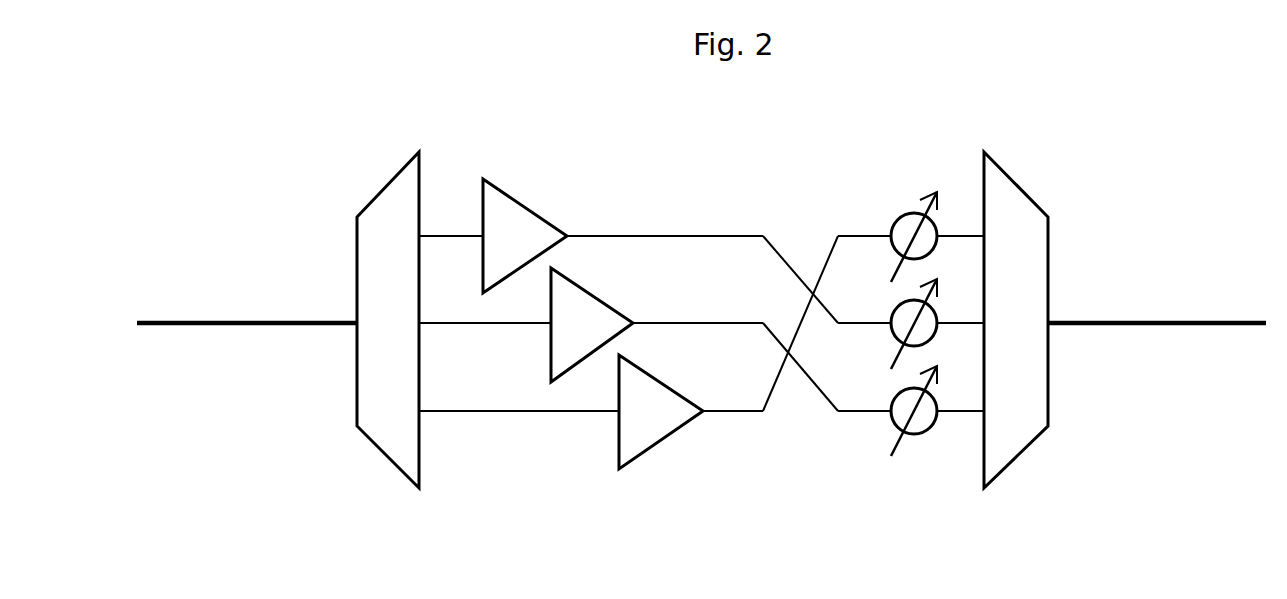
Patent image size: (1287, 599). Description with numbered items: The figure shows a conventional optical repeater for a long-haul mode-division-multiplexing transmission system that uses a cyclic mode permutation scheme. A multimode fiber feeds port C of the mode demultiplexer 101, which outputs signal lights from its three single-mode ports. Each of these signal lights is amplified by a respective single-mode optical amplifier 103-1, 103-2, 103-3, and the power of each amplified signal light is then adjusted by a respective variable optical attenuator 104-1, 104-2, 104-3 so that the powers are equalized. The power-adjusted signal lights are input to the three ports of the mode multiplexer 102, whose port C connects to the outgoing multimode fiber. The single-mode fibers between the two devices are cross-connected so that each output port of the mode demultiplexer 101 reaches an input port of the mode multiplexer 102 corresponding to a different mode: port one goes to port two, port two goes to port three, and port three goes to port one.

The mode demultiplexer 101 is at (384, 185).
The mode multiplexer 102 is at (1020, 182).
The single-mode optical amplifier 103-1 is at (557, 186).
The single-mode optical amplifier 103-2 is at (633, 274).
The single-mode optical amplifier 103-3 is at (700, 359).
The variable optical attenuator 104-1 is at (899, 216).
The variable optical attenuator 104-2 is at (893, 334).
The variable optical attenuator 104-3 is at (918, 434).